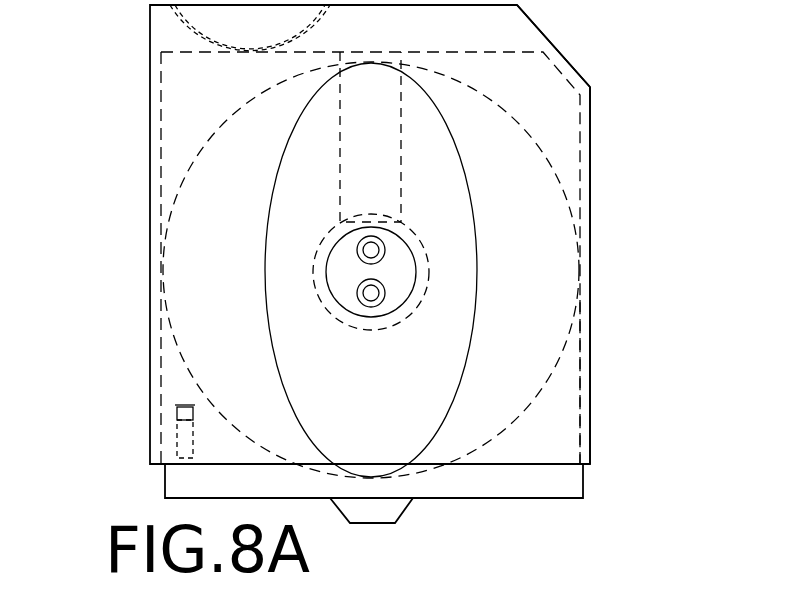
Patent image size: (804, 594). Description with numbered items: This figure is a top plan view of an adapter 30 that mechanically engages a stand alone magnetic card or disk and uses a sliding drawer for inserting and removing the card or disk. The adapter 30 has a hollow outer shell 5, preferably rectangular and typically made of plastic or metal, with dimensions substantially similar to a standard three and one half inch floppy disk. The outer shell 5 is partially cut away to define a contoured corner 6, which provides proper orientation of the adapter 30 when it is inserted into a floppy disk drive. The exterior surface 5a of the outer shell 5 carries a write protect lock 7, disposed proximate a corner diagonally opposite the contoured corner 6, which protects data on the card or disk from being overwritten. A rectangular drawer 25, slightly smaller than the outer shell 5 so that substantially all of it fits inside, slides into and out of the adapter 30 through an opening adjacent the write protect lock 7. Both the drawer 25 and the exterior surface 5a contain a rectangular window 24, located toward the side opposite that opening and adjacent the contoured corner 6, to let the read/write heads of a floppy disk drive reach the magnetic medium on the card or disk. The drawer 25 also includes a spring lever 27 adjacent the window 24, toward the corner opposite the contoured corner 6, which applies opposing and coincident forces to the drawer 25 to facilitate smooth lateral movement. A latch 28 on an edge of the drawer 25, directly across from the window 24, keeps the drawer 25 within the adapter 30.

The adapter 30 is at (603, 158).
The contoured corner 6 is at (545, 36).
The hollow outer shell 5 is at (592, 237).
The exterior surface 5a is at (555, 425).
The sliding drawer 25 is at (538, 477).
The latch 28 is at (365, 523).
The window 24 is at (370, 55).
The spring lever 27 is at (200, 38).
The write protect lock 7 is at (177, 410).